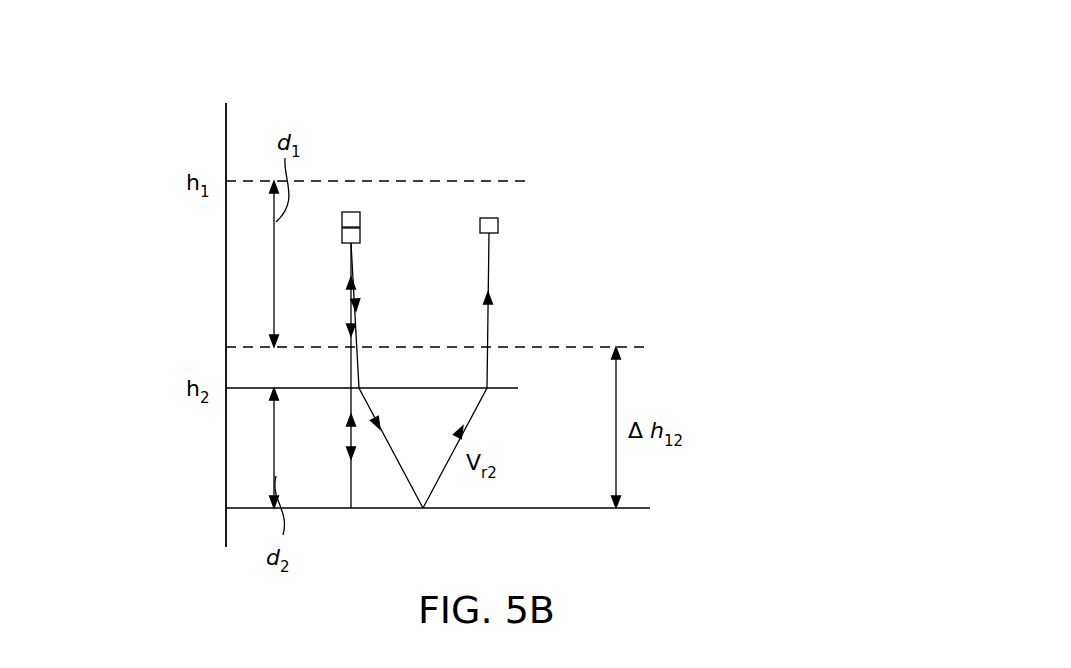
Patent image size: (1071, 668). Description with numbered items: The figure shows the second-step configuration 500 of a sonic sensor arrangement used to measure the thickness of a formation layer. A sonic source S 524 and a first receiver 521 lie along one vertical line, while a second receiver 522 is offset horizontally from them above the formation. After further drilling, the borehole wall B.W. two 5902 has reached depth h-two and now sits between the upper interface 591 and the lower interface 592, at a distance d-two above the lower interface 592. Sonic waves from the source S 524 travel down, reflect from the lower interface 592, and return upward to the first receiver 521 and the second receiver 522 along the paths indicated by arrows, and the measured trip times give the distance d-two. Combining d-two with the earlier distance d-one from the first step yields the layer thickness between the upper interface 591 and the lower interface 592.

The configurations of sonic sensors 500 is at (210, 80).
The first receiver 521 is at (351, 212).
The second receiver 522 is at (489, 218).
The sonic source 524 is at (360, 236).
The borehole wall B.W.2 5902 is at (560, 382).
The interface 1 591 is at (712, 342).
The interface 2 592 is at (712, 508).